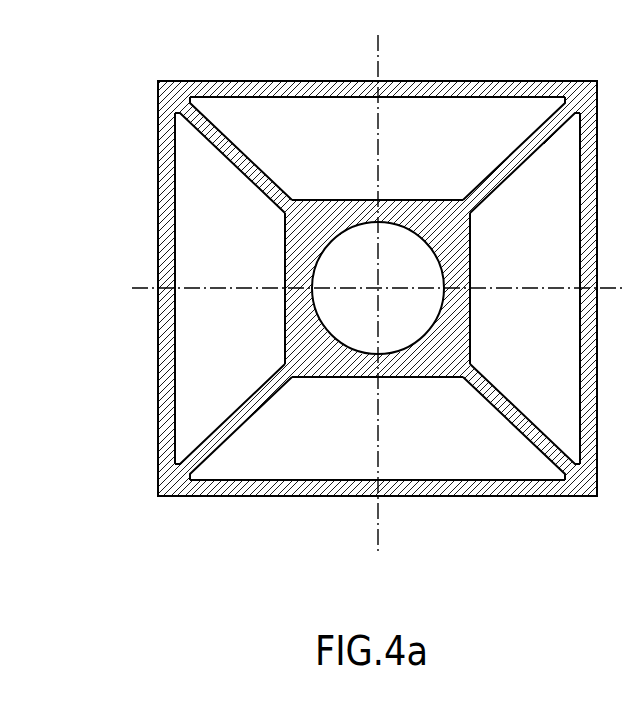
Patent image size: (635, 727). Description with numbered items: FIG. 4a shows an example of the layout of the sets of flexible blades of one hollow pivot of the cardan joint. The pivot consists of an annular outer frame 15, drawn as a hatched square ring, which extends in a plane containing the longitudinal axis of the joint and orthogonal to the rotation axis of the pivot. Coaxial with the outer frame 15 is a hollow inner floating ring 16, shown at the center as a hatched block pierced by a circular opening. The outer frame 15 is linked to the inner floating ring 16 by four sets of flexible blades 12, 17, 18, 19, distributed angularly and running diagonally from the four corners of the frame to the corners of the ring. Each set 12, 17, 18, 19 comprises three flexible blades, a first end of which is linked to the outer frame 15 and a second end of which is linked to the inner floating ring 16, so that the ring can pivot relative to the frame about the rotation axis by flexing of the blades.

The annular outer frame 15 is at (478, 82).
The hollow inner floating ring 16 is at (460, 263).
The set of flexible blades 12 is at (255, 168).
The set of flexible blades 19 is at (503, 167).
The set of flexible blades 17 is at (233, 417).
The set of flexible blades 18 is at (505, 408).